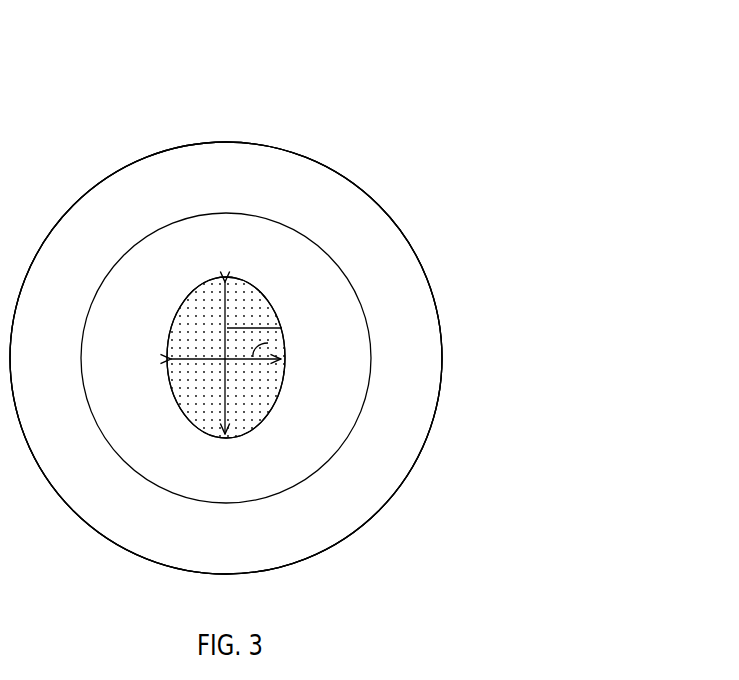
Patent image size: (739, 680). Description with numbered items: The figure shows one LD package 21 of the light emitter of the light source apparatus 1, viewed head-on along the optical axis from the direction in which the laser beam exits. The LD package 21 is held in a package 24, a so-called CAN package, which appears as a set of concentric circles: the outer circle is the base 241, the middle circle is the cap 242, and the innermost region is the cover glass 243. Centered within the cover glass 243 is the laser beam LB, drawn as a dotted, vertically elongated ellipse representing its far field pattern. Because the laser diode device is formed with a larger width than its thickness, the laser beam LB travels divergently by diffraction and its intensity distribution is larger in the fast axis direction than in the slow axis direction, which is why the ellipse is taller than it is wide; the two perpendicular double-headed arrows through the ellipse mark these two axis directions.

The light source apparatus 1 is at (565, 87).
The LD package 21 is at (433, 160).
The package 24 is at (377, 76).
The base 241 is at (226, 141).
The cap 242 is at (263, 215).
The cover glass 243 is at (253, 281).
The laser beam LB is at (263, 291).